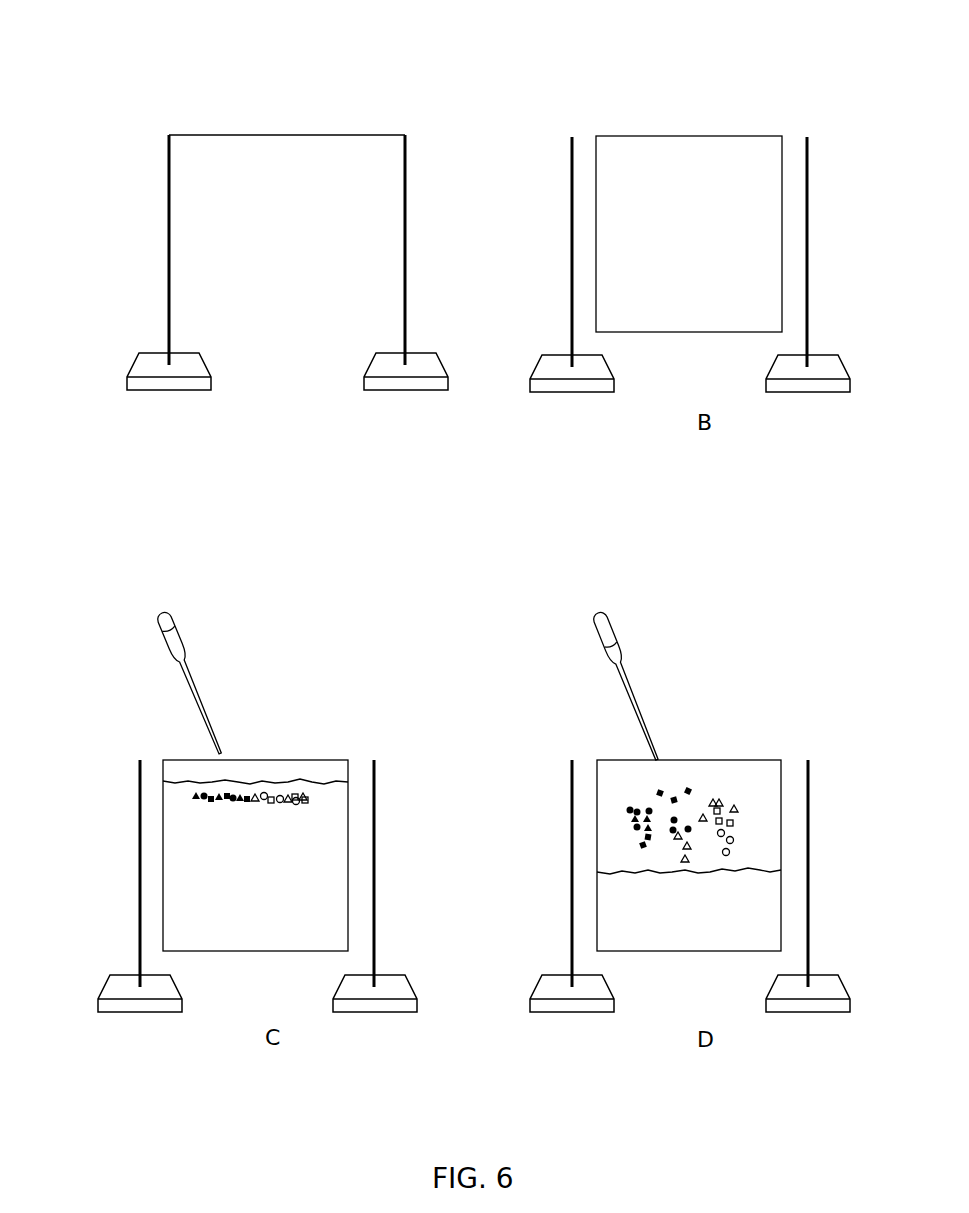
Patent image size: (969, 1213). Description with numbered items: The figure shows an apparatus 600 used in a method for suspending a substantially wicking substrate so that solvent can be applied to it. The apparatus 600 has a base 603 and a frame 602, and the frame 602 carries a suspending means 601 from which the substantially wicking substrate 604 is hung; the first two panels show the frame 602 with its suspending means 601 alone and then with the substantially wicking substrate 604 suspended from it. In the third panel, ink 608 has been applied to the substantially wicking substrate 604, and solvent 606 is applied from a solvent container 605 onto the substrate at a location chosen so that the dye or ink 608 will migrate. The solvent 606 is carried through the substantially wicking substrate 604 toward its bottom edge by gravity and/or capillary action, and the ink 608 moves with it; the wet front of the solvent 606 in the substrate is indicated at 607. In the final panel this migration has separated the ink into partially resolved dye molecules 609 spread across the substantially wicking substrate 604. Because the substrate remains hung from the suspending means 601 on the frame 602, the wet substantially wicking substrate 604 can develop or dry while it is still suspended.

The apparatus 600 is at (142, 112).
The suspending means 601 is at (302, 134).
The frame 602 is at (407, 212).
The base 603 is at (423, 363).
The substantially wicking substrate 604 is at (688, 170).
The solvent container 605 is at (170, 617).
The solvent 606 is at (170, 640).
The liquid surface 607 is at (240, 780).
The ink 608 is at (272, 790).
The partially resolved dye molecules 609 is at (673, 815).